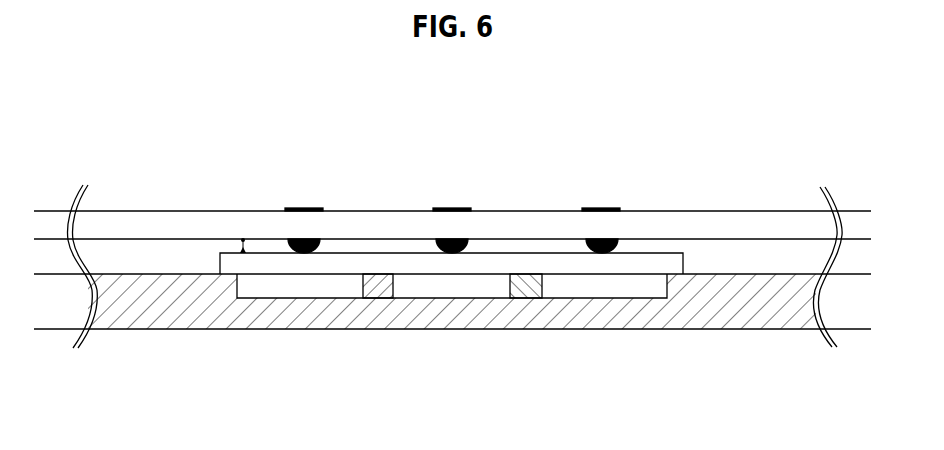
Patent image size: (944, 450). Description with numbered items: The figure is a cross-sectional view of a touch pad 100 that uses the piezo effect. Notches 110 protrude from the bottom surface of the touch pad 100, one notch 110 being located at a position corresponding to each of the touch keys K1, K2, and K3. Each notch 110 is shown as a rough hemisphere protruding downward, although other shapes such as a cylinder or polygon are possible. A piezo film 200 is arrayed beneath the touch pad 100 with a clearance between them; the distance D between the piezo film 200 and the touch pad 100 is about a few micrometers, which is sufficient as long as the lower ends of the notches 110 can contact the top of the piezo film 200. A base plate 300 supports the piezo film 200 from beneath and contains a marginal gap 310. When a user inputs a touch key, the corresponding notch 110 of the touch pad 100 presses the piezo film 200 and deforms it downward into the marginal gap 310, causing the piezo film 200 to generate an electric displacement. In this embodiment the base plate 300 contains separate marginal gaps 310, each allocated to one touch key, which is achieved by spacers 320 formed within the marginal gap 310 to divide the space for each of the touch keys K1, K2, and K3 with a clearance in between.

The touch pad 100 is at (127, 223).
The notches 110 is at (437, 240).
The piezo film 200 is at (640, 263).
The base plate 300 is at (762, 307).
The marginal gap 310 is at (595, 287).
The spacers 320 is at (515, 290).
The distance between the piezo film and the touch pad D is at (243, 238).
The touch key K1 is at (303, 180).
The touch key K2 is at (448, 181).
The touch key K3 is at (601, 181).